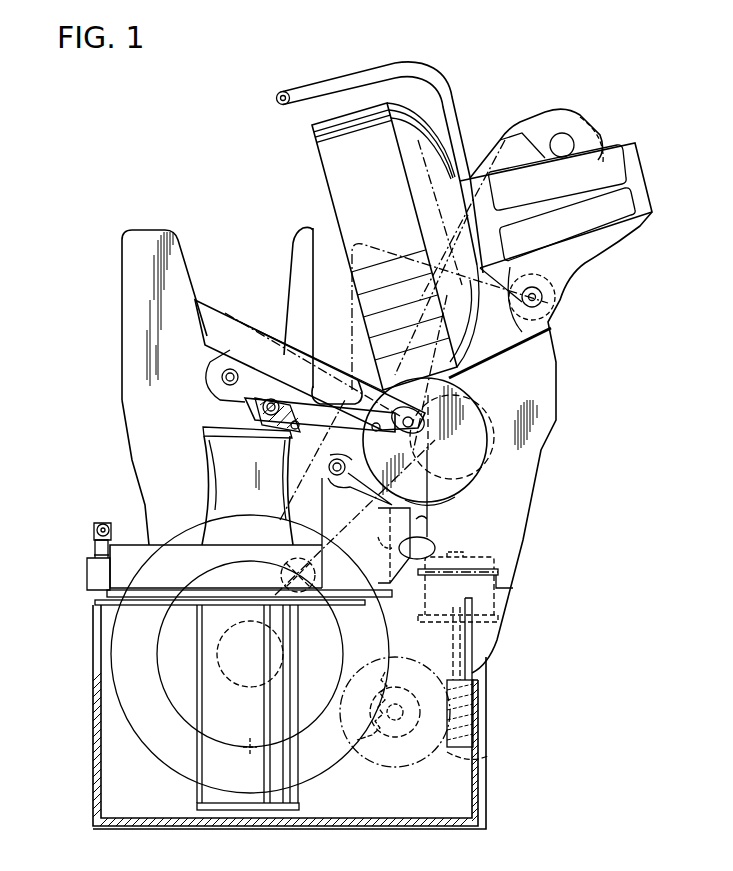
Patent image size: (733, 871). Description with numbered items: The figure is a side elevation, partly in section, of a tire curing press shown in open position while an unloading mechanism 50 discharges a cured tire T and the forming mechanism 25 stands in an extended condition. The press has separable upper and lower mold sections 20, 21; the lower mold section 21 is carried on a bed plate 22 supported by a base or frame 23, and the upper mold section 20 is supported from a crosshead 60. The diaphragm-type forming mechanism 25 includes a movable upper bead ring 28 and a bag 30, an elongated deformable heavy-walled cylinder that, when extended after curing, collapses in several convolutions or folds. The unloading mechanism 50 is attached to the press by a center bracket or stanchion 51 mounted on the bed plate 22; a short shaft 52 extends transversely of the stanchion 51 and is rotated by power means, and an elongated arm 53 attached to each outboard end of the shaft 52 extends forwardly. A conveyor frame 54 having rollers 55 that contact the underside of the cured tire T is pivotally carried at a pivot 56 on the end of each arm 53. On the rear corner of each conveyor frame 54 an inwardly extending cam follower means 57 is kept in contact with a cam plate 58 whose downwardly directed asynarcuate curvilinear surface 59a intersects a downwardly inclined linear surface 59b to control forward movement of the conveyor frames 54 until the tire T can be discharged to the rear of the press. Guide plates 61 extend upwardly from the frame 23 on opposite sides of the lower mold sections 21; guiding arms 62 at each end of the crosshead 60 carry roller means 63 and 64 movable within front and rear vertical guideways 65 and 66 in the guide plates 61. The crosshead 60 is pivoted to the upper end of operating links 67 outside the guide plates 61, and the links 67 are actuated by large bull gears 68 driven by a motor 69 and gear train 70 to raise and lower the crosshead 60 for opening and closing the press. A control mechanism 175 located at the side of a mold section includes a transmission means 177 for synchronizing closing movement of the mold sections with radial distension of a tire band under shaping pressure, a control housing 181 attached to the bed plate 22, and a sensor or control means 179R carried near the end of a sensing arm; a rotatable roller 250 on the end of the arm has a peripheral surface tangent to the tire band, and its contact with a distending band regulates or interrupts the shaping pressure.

The upper mold section 20 is at (342, 170).
The lower mold section 21 is at (127, 557).
The bed plate 22 is at (117, 593).
The base or frame 23 is at (92, 713).
The forming mechanism 25 is at (204, 464).
The upper bead ring 28 is at (217, 423).
The bag 30 is at (217, 502).
The unloading mechanism 50 is at (232, 404).
The center bracket or stanchion 51 is at (433, 540).
The short shaft 52 is at (392, 436).
The elongated arm 53 is at (318, 398).
The conveyor frame 54 is at (272, 428).
The rollers 55 is at (218, 373).
The pivot 56 is at (282, 402).
The cam follower means 57 is at (337, 477).
The cam plate 58 is at (473, 443).
The asynarcuate curvilinear surface 59a is at (457, 497).
The downwardly inclined linear surface 59b is at (380, 536).
The crosshead 60 is at (652, 170).
The guide plates 61 is at (552, 400).
The guiding arms 62 is at (513, 347).
The roller means 63 is at (483, 400).
The roller means 64 is at (545, 296).
The front vertical guideway 65 is at (313, 308).
The rear vertical guideway 66 is at (427, 519).
The operating links 67 is at (522, 132).
The bull gears 68 is at (330, 767).
The motor 69 is at (512, 588).
The gear train 70 is at (487, 763).
The control mechanism 175 is at (81, 556).
The transmission means 177 is at (88, 587).
The sensor or control means 179R is at (107, 522).
The control housing 181 is at (90, 575).
The rotatable roller 250 is at (94, 531).
The cured tire T is at (227, 303).